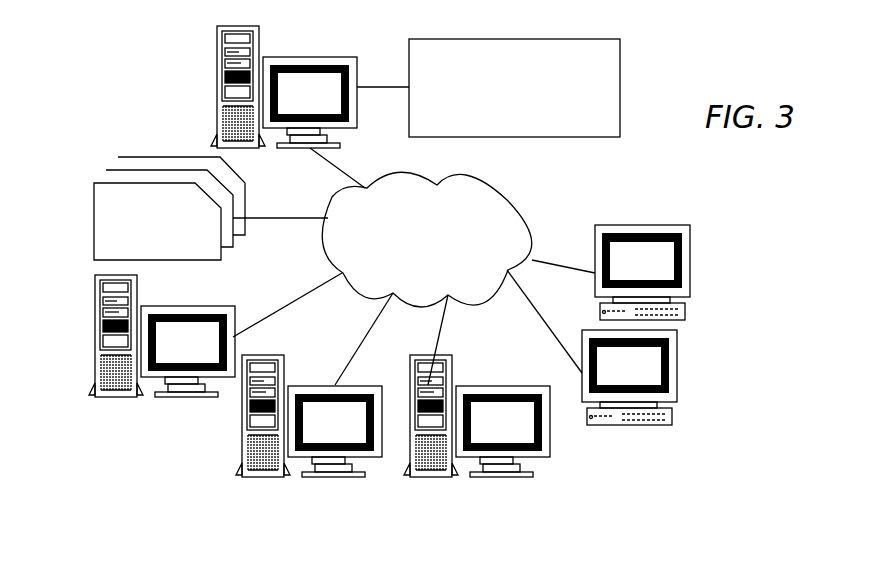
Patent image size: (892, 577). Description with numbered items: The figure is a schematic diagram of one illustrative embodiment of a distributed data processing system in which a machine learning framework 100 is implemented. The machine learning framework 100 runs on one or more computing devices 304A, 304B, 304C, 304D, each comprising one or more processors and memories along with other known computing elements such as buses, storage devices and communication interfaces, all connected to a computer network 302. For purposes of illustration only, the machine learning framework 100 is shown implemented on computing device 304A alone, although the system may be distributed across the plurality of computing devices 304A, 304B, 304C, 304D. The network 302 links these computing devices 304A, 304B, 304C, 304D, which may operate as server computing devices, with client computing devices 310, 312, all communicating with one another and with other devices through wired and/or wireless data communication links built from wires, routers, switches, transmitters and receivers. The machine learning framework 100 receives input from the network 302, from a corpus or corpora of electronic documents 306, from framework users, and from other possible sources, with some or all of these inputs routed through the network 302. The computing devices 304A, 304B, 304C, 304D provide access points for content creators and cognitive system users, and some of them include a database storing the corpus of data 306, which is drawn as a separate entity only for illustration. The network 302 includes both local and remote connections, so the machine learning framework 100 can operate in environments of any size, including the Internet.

The machine learning framework 100 is at (608, 98).
The computer network 302 is at (443, 263).
The computing device 304A is at (207, 81).
The computing device 304B is at (207, 294).
The computing device 304C is at (334, 519).
The computing device 304D is at (495, 519).
The corpus or corpora of electronic documents 306 is at (172, 231).
The client computing device 310 is at (732, 274).
The client computing device 312 is at (724, 377).